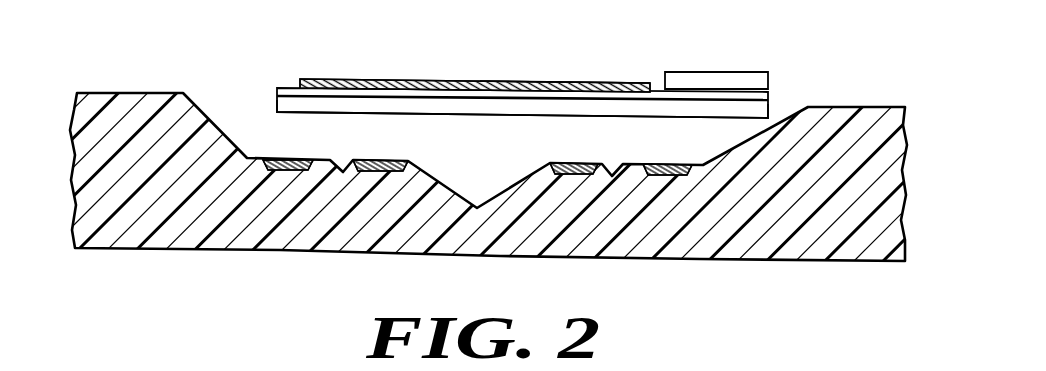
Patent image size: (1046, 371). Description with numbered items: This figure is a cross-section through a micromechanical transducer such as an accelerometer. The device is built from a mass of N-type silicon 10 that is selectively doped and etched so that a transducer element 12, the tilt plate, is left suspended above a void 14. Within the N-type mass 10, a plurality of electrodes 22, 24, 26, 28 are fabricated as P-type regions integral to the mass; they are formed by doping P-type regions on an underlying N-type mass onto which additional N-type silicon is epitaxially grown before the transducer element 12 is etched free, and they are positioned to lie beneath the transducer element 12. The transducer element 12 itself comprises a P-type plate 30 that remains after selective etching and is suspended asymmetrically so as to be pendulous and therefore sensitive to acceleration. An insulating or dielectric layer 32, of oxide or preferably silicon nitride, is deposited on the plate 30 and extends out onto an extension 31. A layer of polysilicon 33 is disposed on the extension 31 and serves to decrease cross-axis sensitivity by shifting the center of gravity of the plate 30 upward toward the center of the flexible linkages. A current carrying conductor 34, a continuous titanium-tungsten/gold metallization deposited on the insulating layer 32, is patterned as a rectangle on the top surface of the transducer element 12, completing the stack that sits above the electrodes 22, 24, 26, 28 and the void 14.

The mass of N-type silicon 10 is at (776, 200).
The transducer element 12 is at (290, 87).
The void 14 is at (490, 149).
The electrode 22 is at (287, 159).
The electrode 24 is at (375, 162).
The electrode 26 is at (564, 163).
The electrode 28 is at (659, 166).
The P-type plate 30 is at (402, 75).
The extension 31 is at (770, 113).
The insulating layer 32 is at (768, 101).
The layer of polysilicon 33 is at (695, 82).
The current carrying conductor 34 is at (573, 82).